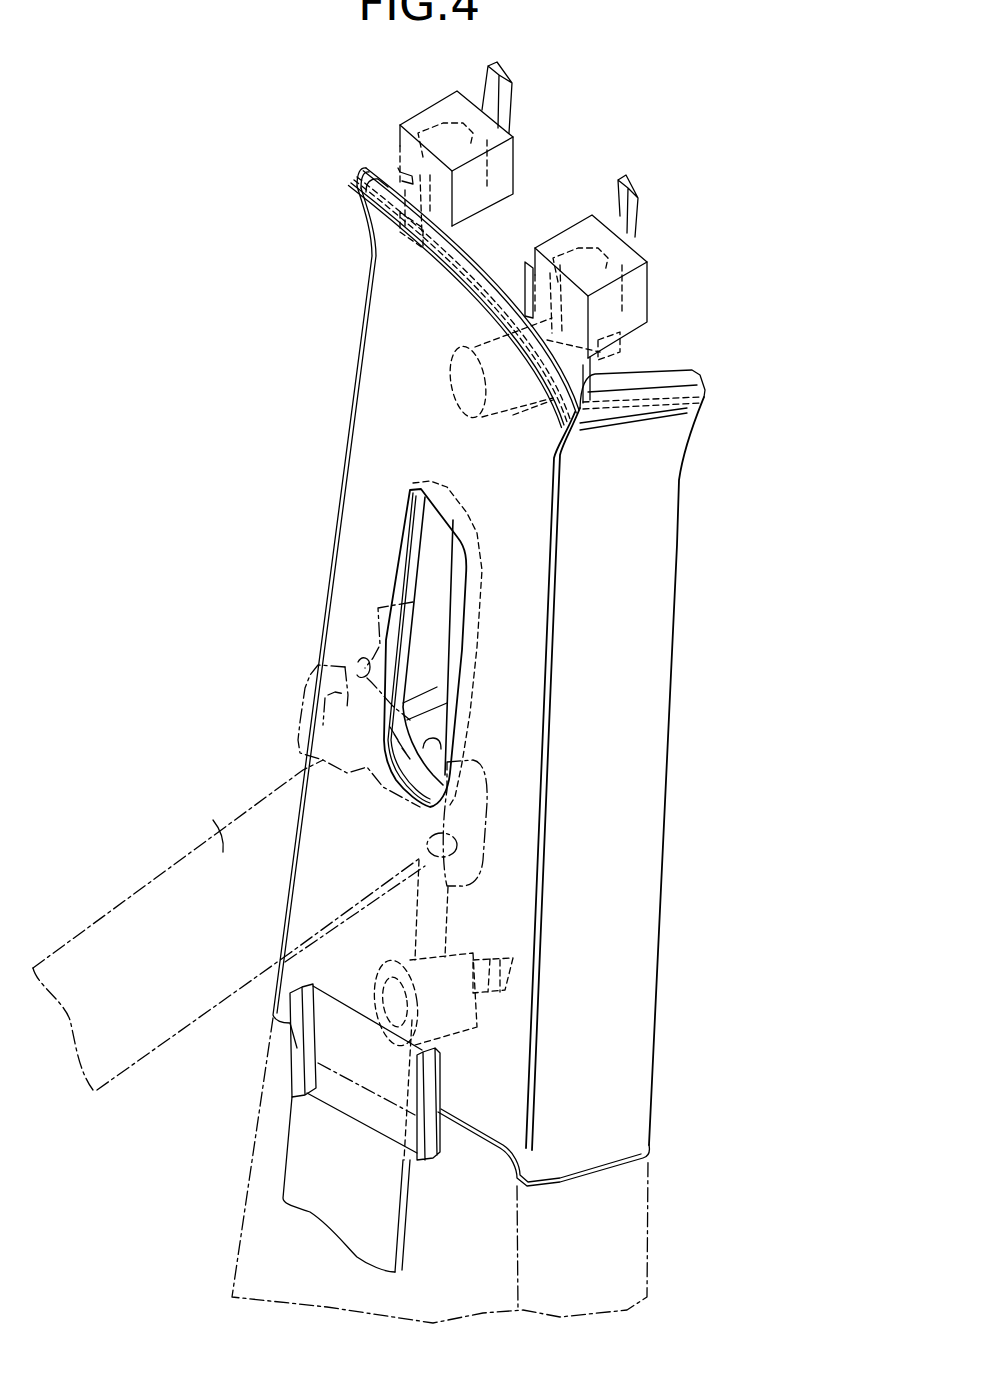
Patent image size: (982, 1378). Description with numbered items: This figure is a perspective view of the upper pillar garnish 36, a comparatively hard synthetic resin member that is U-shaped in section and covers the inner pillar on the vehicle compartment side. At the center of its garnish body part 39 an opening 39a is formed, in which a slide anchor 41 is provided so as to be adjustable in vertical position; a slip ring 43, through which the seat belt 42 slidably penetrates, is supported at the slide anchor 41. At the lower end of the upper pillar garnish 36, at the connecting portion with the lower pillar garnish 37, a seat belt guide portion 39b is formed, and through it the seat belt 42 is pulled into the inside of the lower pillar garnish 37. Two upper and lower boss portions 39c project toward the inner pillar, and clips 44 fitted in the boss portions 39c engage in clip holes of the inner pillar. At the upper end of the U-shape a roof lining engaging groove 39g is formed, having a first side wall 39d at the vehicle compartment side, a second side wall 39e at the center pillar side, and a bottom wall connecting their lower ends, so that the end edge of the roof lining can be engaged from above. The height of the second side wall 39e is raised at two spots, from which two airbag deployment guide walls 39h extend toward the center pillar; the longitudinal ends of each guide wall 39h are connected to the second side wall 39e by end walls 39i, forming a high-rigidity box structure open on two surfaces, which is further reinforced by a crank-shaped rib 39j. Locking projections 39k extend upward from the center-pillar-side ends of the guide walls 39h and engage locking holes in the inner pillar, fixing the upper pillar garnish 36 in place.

The upper pillar garnish 36 is at (302, 468).
The lower pillar garnish 37 is at (250, 1150).
The garnish body part 39 is at (332, 562).
The opening 39a is at (415, 520).
The seat belt guide portion 39b is at (358, 1108).
The boss portion 39c is at (513, 415).
The first side wall 39d is at (447, 250).
The second side wall 39e is at (407, 175).
The roof lining engaging groove 39g is at (497, 287).
The airbag deployment guide wall 39h is at (437, 110).
The end wall 39i is at (502, 175).
The crank-shaped rib 39j is at (515, 147).
The locking projection 39k is at (510, 105).
The slide anchor 41 is at (363, 662).
The seat belt 42 is at (207, 817).
The slip ring 43 is at (490, 828).
The clip 44 is at (623, 355).